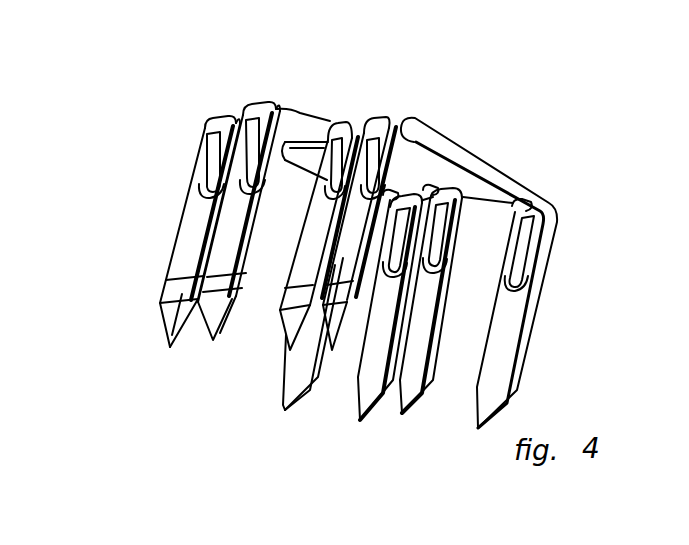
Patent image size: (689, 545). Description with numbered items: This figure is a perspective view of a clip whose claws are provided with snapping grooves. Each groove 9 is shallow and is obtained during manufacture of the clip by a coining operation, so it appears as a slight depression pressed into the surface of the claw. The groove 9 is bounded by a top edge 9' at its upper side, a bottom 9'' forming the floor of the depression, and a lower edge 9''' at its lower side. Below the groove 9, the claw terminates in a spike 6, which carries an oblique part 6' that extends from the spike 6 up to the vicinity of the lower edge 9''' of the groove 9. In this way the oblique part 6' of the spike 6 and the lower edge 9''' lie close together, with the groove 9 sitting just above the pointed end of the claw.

The groove 9 is at (144, 211).
The top edge 9' is at (149, 267).
The bottom 9'' is at (133, 324).
The lower edge 9''' is at (212, 359).
The spike 6 is at (177, 361).
The oblique part 6' is at (130, 354).